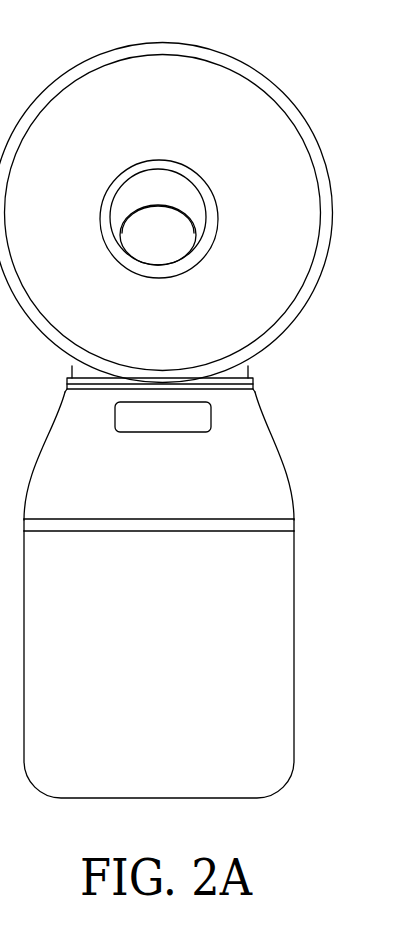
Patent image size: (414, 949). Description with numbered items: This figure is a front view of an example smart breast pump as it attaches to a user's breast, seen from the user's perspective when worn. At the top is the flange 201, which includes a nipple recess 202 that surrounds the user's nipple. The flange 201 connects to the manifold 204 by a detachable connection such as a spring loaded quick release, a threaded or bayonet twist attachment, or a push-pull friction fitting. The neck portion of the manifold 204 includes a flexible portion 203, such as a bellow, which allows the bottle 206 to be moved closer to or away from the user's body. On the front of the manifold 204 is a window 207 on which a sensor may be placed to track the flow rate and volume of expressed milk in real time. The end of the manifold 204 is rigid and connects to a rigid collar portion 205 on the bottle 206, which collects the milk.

The flange 201 is at (116, 90).
The nipple recess 202 is at (132, 207).
The flexible portion 203 is at (250, 382).
The manifold 204 is at (244, 462).
The rigid collar portion 205 is at (292, 520).
The bottle 206 is at (245, 685).
The window 207 is at (132, 433).